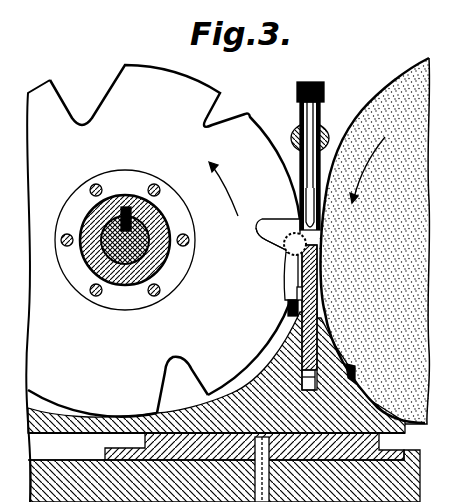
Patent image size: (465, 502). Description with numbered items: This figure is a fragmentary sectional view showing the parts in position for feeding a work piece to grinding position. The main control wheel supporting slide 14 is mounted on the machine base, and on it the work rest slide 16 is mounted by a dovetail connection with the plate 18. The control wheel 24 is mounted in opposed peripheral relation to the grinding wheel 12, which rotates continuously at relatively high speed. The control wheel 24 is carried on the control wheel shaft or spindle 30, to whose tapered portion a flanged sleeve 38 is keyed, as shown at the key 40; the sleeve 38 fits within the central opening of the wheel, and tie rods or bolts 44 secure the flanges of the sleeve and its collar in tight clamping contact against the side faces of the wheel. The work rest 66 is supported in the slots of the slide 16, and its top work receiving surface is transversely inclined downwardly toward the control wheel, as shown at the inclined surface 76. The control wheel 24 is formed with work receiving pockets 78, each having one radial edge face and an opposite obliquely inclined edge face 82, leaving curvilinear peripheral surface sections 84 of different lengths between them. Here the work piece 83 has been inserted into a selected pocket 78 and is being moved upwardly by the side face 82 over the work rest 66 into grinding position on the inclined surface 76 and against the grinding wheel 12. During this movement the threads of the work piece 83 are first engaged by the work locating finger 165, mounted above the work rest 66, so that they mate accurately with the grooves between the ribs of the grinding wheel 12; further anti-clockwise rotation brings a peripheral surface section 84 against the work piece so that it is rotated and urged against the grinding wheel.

The grinding wheel 12 is at (374, 241).
The main control wheel supporting slide 14 is at (421, 477).
The work rest slide 16 is at (369, 406).
The plate 18 is at (406, 451).
The control wheel 24 is at (163, 283).
The control wheel shaft or spindle 30 is at (110, 247).
The flanged sleeve 38 is at (167, 228).
The key 40 is at (124, 214).
The tie rods or bolts 44 is at (159, 289).
The work rest 66 is at (319, 299).
The inclined top surface of the work rest 76 is at (267, 229).
The work receiving pocket 78 is at (190, 371).
The obliquely inclined edge face 82 is at (261, 237).
The work piece 83 is at (291, 254).
The curvilinear peripheral surface section 84 is at (278, 333).
The work locating finger 165 is at (314, 218).